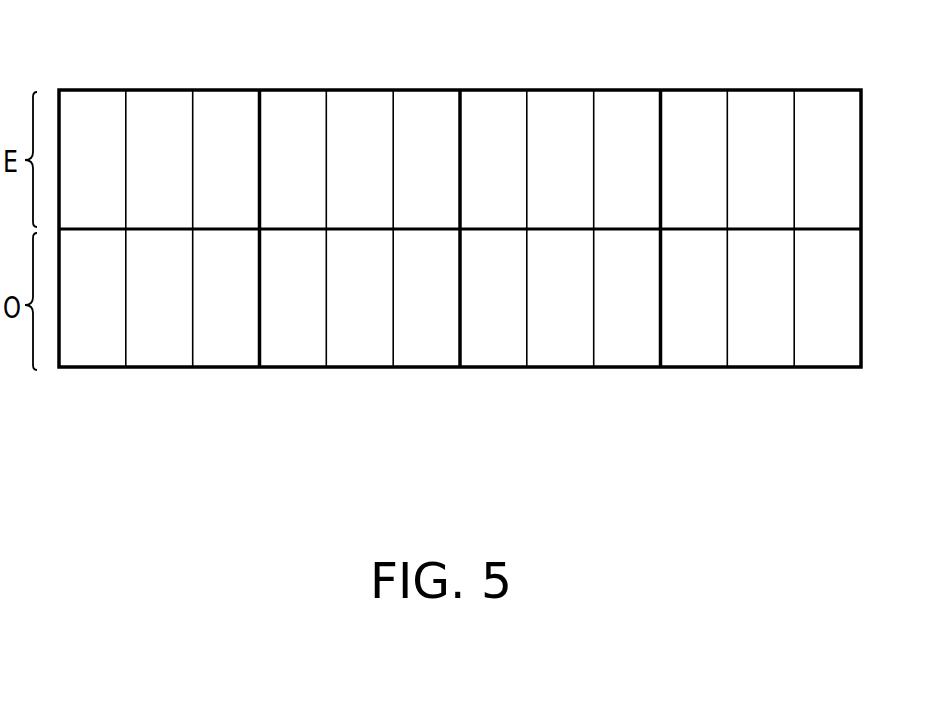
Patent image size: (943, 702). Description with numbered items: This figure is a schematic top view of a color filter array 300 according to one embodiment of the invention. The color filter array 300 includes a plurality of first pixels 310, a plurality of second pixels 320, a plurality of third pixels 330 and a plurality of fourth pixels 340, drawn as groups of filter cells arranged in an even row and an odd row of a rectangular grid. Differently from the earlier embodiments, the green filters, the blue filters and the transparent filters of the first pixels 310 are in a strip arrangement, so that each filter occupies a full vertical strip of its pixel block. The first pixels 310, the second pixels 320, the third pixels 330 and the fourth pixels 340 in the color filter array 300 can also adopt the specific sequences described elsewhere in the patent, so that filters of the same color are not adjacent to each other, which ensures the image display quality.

The color filter array 300 is at (827, 492).
The first pixels 310 is at (365, 88).
The second pixels 320 is at (765, 88).
The third pixels 330 is at (152, 88).
The fourth pixels 340 is at (563, 88).